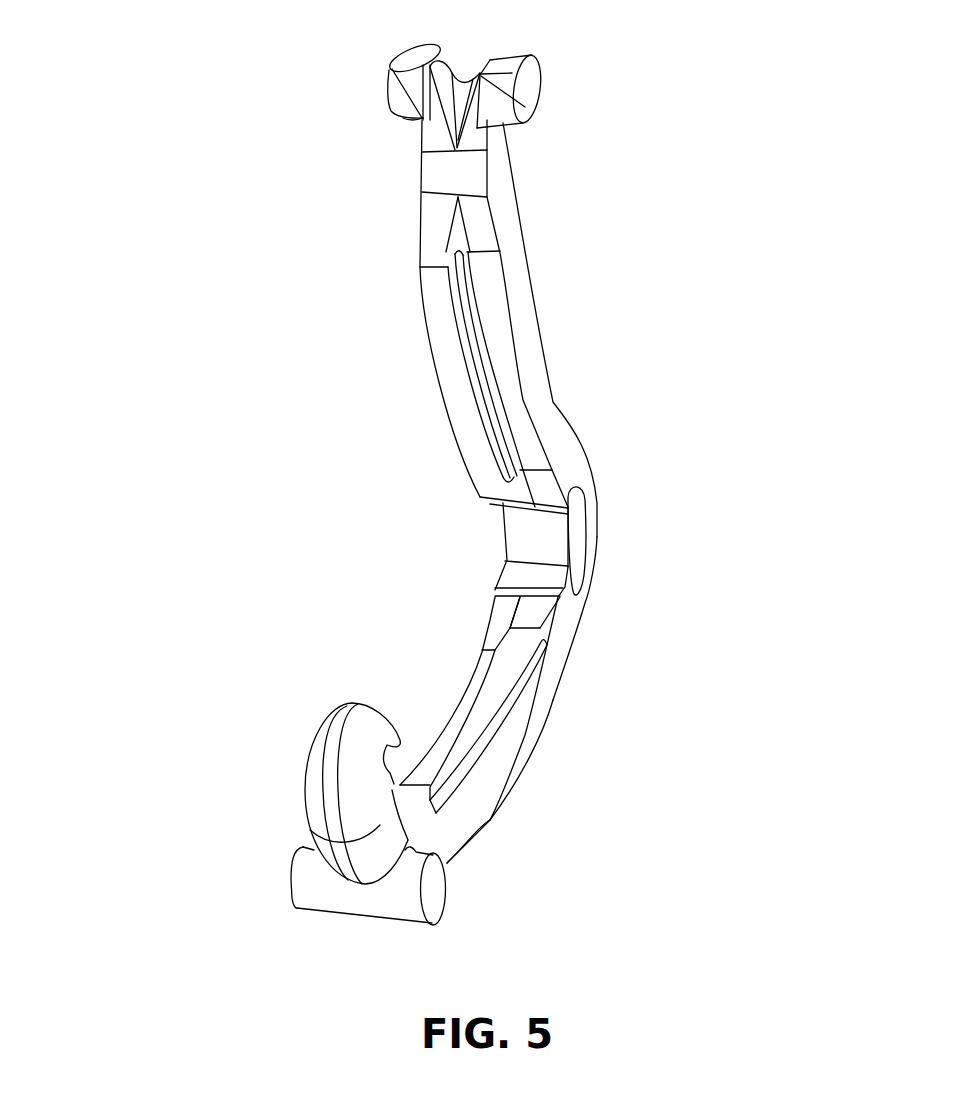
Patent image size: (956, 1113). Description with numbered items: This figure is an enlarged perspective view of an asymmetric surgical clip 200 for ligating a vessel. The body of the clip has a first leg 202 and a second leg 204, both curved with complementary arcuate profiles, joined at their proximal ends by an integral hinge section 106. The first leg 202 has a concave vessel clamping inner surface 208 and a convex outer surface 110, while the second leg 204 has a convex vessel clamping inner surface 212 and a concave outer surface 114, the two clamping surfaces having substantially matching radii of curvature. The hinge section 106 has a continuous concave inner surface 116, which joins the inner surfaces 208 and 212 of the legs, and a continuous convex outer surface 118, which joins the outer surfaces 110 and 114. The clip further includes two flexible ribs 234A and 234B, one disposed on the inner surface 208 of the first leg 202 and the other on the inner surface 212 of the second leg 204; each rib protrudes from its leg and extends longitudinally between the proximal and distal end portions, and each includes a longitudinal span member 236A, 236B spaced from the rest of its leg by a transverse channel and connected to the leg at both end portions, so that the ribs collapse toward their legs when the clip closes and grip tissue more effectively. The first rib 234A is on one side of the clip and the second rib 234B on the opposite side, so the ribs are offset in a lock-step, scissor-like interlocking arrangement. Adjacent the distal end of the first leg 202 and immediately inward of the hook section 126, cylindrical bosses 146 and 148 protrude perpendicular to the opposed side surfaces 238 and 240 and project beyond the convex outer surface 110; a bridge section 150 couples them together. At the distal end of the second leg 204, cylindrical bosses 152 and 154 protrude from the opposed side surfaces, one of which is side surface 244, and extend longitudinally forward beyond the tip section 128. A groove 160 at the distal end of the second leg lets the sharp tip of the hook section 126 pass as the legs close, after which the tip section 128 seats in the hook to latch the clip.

The asymmetric surgical clip 200 is at (177, 476).
The second leg 204 is at (551, 234).
The side surface of second leg 244 is at (520, 323).
The concave outer surface 114 is at (547, 368).
The second flexible rib 234B is at (443, 353).
The longitudinal span member of second rib 236B is at (448, 392).
The convex vessel clamping inner surface 212 is at (440, 440).
The hinge section 106 is at (624, 507).
The concave inner surface of hinge 116 is at (527, 540).
The convex outer surface of hinge 118 is at (598, 535).
The concave vessel clamping inner surface 208 is at (462, 627).
The first leg 202 is at (578, 801).
The side surface of first leg 238 is at (452, 712).
The first flexible rib 234A is at (503, 680).
The longitudinal span member of first rib 236A is at (483, 715).
The side surface of first leg 240 is at (507, 763).
The convex outer surface 110 is at (499, 812).
The hook section 126 is at (325, 727).
The bridge section 150 is at (358, 922).
The cylindrical boss 148 is at (438, 890).
The cylindrical boss 146 is at (296, 886).
The cylindrical boss 152 is at (400, 57).
The cylindrical boss 154 is at (542, 63).
The groove 160 is at (456, 82).
The tip section 128 is at (407, 116).